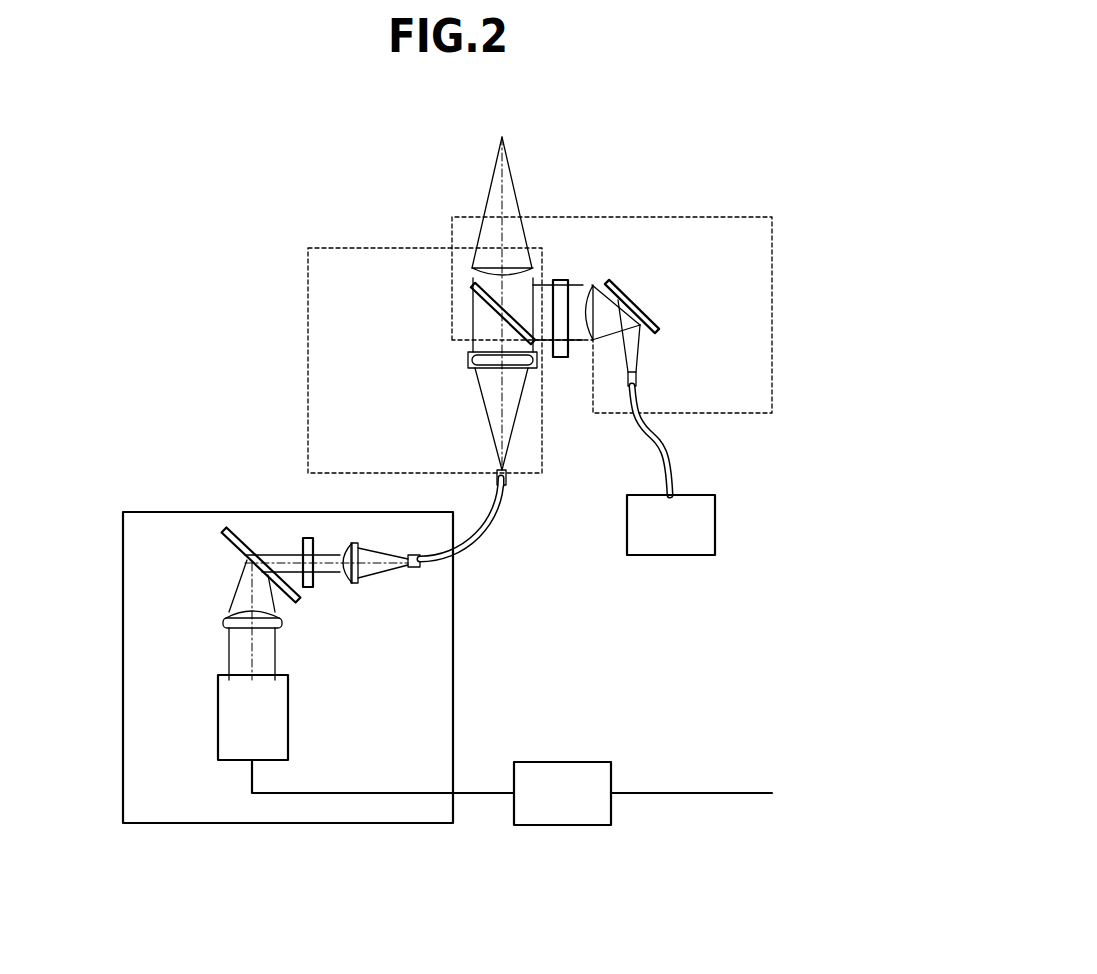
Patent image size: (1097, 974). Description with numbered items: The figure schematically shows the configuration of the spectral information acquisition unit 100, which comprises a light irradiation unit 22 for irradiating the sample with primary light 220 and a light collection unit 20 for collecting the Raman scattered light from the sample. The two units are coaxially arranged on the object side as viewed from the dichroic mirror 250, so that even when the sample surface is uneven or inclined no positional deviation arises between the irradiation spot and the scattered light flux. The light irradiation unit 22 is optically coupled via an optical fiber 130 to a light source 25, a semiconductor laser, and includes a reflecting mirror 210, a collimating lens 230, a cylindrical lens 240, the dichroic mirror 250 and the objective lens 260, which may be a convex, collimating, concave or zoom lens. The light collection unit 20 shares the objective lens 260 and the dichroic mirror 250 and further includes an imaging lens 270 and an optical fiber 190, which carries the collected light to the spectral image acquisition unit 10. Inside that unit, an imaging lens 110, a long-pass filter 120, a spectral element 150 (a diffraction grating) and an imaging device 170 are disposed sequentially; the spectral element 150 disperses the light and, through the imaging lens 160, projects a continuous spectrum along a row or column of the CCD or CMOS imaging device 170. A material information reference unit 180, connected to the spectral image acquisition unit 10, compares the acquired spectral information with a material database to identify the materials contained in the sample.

The spectral information acquisition unit 100 is at (165, 172).
The spectral image acquisition unit 10 is at (123, 592).
The light collection unit 20 is at (308, 337).
The light irradiation unit 22 is at (772, 283).
The light source 25 is at (715, 522).
The imaging lens 110 is at (355, 583).
The long-pass filter 120 is at (309, 588).
The optical fiber 130 is at (672, 458).
The spectral element 150 is at (222, 532).
The imaging lens 160 is at (223, 620).
The imaging device 170 is at (288, 718).
The material information reference unit 180 is at (557, 762).
The optical fiber 190 is at (482, 542).
The reflecting mirror 210 is at (657, 332).
The primary light 220 is at (490, 186).
The collimating lens 230 is at (593, 280).
The cylindrical lens 240 is at (563, 278).
The dichroic mirror 250 is at (473, 290).
The objective lens 260 is at (472, 268).
The imaging lens 270 is at (468, 358).